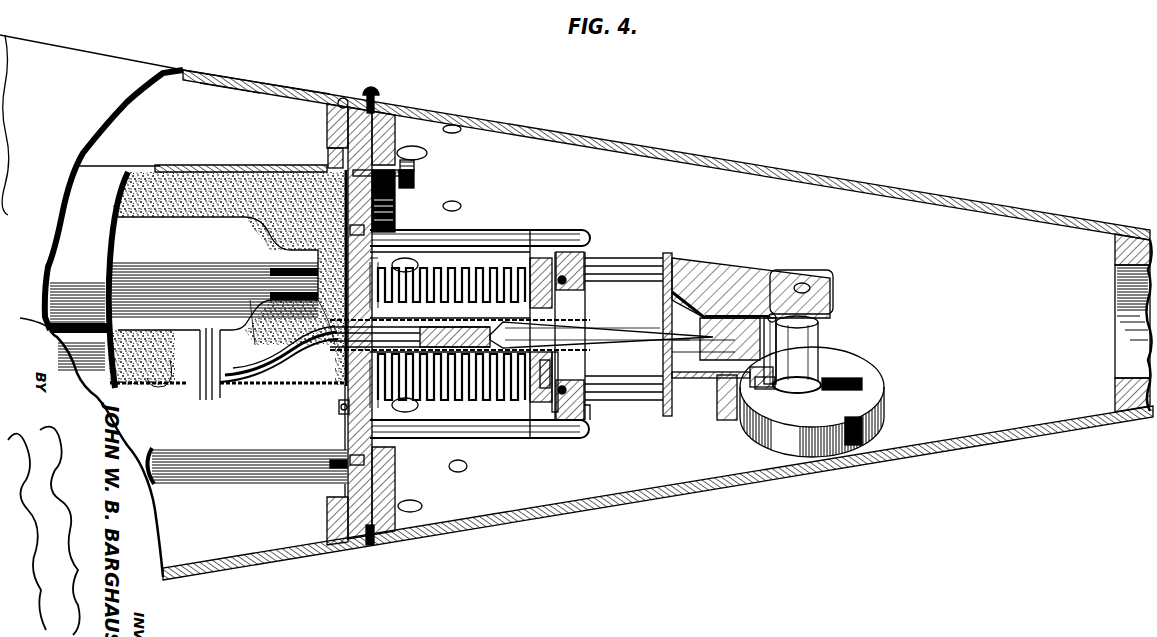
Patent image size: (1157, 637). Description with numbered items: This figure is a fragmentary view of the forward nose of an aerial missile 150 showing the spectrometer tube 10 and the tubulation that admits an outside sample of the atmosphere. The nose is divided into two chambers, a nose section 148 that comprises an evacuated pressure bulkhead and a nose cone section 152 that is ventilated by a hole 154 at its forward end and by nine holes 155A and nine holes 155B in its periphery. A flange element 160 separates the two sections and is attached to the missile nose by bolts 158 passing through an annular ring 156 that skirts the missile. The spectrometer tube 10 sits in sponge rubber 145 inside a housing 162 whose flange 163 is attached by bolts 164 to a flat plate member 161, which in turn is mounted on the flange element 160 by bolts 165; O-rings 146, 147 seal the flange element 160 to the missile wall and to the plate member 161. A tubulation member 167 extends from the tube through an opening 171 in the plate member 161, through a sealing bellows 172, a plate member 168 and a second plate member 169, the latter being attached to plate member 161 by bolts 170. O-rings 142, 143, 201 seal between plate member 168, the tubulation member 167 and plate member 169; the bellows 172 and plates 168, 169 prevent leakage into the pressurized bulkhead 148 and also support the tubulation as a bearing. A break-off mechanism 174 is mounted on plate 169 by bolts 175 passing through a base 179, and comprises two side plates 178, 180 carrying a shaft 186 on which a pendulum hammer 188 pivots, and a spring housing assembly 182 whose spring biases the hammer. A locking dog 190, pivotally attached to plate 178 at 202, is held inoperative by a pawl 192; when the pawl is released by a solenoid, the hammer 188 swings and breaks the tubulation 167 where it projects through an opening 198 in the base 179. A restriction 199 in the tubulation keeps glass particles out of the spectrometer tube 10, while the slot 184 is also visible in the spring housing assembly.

The spectrometer tube 10 is at (182, 253).
The O-ring 142 is at (530, 393).
The O-ring 143 is at (560, 393).
The sponge rubber 145 is at (163, 378).
The O-ring 146 is at (356, 100).
The O-ring 147 is at (391, 106).
The nose section 148 is at (284, 76).
The aerial missile 150 is at (242, 68).
The nose cone section 152 is at (609, 139).
The hole 154 is at (1123, 355).
The holes 155A is at (425, 155).
The holes 155B is at (452, 133).
The annular ring 156 is at (339, 97).
The bolts 158 is at (379, 92).
The flange element 160 is at (330, 129).
The flat plate member 161 is at (396, 212).
The housing 162 is at (227, 164).
The flange 163 is at (341, 409).
The bolts 164 is at (333, 381).
The bolts 165 is at (416, 181).
The tubulation member 167 is at (440, 327).
The plate member 168 is at (542, 272).
The second plate member 169 is at (584, 410).
The bolts 170 is at (466, 440).
The opening 171 is at (365, 362).
The sealing bellows 172 is at (418, 263).
The break-off mechanism 174 is at (742, 246).
The bolts 175 is at (611, 257).
The side plate 178 is at (826, 298).
The base 179 is at (668, 416).
The side plate 180 is at (700, 372).
The spring housing assembly 182 is at (780, 446).
The slot 184 is at (848, 383).
The shaft 186 is at (801, 283).
The pendulum hammer 188 is at (807, 364).
The locking dog 190 is at (758, 318).
The pawl 192 is at (755, 372).
The opening 198 is at (668, 352).
The restriction 199 is at (455, 335).
The O-ring 201 is at (580, 283).
The pivot 202 is at (770, 313).